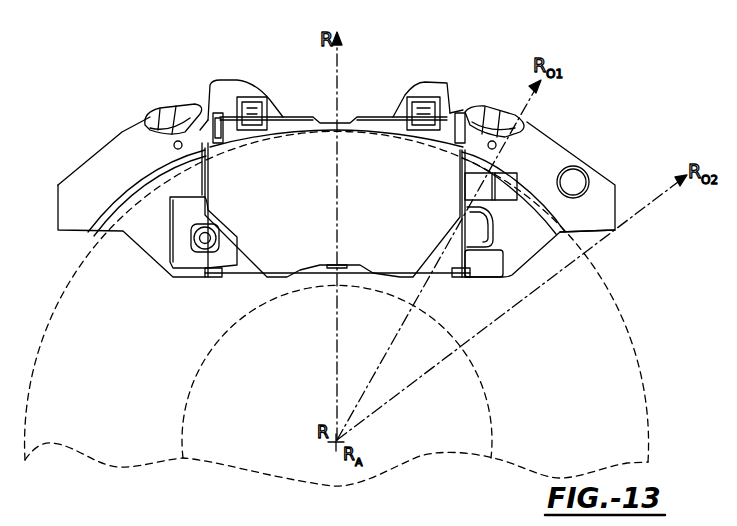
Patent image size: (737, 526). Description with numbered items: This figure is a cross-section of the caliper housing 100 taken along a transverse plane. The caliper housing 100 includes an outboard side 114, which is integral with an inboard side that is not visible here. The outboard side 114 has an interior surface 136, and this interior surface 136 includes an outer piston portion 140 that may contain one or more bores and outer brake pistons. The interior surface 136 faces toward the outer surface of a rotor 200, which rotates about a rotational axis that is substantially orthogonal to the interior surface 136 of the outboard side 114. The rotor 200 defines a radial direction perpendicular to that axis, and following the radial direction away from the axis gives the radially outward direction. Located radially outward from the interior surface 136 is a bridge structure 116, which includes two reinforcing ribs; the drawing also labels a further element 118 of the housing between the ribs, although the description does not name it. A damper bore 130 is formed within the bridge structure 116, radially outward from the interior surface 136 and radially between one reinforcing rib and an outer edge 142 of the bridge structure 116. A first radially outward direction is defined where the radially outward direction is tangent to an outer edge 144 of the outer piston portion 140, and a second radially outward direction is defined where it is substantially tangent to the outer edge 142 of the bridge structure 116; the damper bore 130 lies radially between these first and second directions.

The caliper housing 100 is at (62, 70).
The outboard side 114 is at (150, 205).
The bridge structure 116 is at (138, 137).
The brake pad 118 is at (306, 147).
The damper bore 130 is at (577, 178).
The interior surface 136 is at (508, 235).
The outer piston portion 140 is at (382, 202).
The outer edge of the bridge structure 142 is at (617, 228).
The outer edge of the outer piston portion 144 is at (460, 218).
The rotor 200 is at (78, 302).